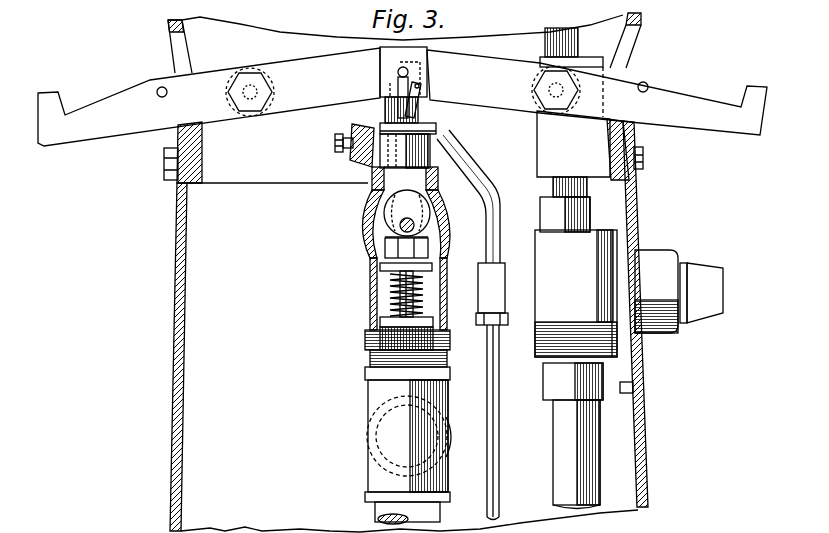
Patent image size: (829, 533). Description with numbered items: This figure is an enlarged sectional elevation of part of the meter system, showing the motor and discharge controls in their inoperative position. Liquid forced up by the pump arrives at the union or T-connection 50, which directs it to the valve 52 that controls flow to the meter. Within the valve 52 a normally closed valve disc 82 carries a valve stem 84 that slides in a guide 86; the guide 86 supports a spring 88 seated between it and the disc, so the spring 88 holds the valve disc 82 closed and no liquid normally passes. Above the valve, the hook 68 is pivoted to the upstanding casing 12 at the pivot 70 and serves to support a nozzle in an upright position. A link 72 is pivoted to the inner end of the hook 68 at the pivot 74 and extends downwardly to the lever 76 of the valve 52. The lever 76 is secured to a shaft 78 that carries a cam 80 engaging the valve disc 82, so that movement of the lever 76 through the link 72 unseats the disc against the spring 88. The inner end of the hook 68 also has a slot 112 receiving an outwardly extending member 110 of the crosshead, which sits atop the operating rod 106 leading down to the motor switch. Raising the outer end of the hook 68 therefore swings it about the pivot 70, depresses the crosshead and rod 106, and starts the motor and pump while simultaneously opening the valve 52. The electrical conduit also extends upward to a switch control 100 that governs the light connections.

The casing 12 is at (646, 466).
The T-connection 50 is at (385, 436).
The valve 52 is at (368, 241).
The hook 68 is at (208, 78).
The pivot 70 is at (252, 86).
The link 72 is at (424, 111).
The pivot 74 is at (422, 84).
The lever 76 is at (368, 158).
The shaft 78 is at (383, 228).
The cam 80 is at (428, 220).
The valve disc 82 is at (378, 268).
The valve stem 84 is at (404, 298).
The guide 86 is at (395, 314).
The spring 88 is at (390, 286).
The switch control 100 is at (655, 264).
The rod 106 is at (500, 450).
The outwardly extending member 110 is at (398, 70).
The slot 112 is at (396, 84).